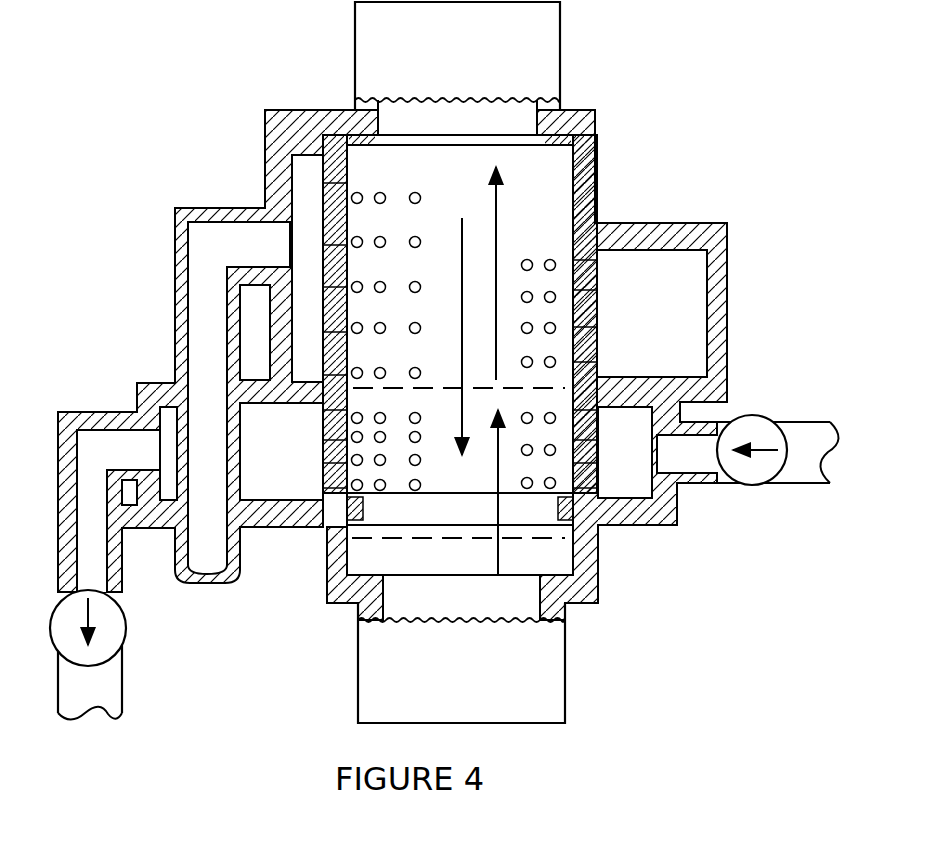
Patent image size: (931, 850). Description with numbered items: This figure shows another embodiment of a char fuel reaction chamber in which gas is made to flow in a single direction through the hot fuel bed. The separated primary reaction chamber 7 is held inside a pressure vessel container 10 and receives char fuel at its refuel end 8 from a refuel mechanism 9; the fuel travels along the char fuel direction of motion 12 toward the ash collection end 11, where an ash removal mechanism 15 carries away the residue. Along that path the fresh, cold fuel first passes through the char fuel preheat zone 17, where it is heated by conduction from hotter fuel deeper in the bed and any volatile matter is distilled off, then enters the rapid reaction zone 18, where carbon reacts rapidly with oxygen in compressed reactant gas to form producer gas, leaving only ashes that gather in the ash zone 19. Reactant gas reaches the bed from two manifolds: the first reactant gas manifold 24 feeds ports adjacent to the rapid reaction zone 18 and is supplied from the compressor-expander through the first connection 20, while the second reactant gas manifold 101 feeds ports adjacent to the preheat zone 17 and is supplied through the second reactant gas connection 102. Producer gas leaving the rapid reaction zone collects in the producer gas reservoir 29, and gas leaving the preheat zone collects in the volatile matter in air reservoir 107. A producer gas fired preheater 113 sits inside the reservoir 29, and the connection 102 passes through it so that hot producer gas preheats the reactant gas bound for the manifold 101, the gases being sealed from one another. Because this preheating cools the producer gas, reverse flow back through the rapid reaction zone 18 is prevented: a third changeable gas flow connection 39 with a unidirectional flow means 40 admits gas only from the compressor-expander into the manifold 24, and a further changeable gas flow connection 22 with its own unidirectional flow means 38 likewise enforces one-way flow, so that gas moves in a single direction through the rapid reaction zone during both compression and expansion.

The primary reaction chamber 7 is at (533, 213).
The refuel end 8 is at (427, 163).
The refuel mechanism 9 is at (540, 40).
The pressure vessel container 10 is at (463, 288).
The ash collection end 11 is at (448, 560).
The char fuel direction of motion 12 is at (593, 217).
The ash removal mechanism 15 is at (528, 697).
The char fuel preheat zone 17 is at (498, 190).
The rapid reaction zone 18 is at (500, 458).
The ash zone 19 is at (502, 560).
The first connection 20 is at (797, 467).
The changeable gas flow connection 22 is at (100, 688).
The first reactant gas manifold 24 is at (620, 480).
The producer gas reservoir 29 is at (167, 458).
The unidirectional flow means 38 is at (110, 637).
The third separate reactant gas changeable gas flow connection 39 is at (685, 452).
The unidirectional flow means 40 is at (753, 473).
The second reactant gas manifold 101 is at (308, 195).
The second reactant gas connection 102 is at (210, 572).
The volatile matter in air reservoir 107 is at (668, 333).
The producer gas fired preheater 113 is at (205, 443).